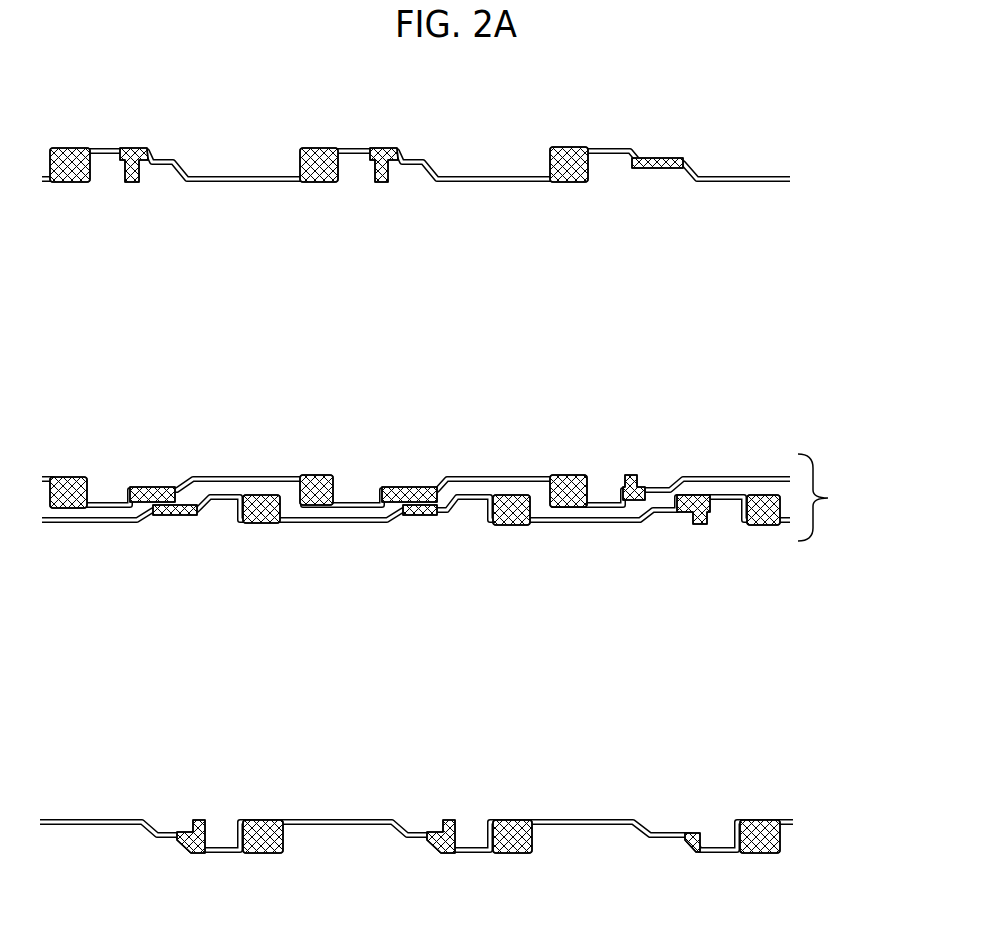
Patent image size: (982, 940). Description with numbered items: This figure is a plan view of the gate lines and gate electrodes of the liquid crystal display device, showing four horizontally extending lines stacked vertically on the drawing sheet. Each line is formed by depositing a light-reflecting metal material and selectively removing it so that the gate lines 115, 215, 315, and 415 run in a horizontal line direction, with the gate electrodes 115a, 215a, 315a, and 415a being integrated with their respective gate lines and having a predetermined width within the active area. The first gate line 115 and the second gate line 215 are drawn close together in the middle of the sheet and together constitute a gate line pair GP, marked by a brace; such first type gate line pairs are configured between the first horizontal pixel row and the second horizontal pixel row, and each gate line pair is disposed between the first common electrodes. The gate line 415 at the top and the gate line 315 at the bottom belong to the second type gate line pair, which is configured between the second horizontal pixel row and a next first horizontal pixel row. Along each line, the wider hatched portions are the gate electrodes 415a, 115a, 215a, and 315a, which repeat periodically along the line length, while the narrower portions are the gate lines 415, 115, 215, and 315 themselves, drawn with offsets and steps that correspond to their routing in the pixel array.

The gate line 415 is at (143, 148).
The gate electrode 415a is at (72, 149).
The first gate line 115 is at (143, 487).
The gate electrode 115a is at (77, 477).
The second gate line 215 is at (87, 527).
The gate electrode 215a is at (257, 524).
The gate line 315 is at (62, 819).
The gate electrode 315a is at (277, 854).
The gate line pair GP is at (844, 497).